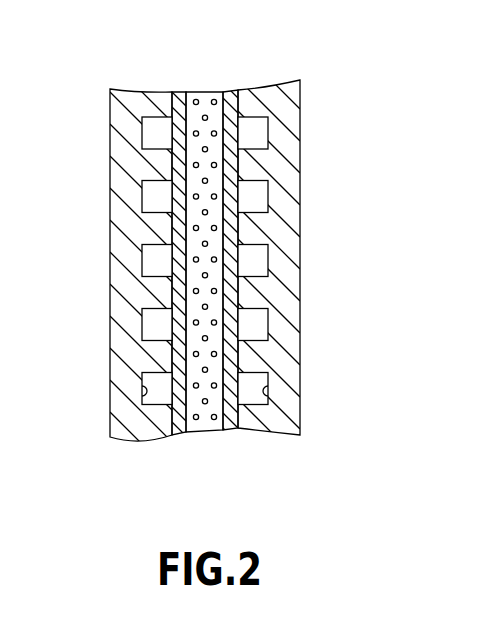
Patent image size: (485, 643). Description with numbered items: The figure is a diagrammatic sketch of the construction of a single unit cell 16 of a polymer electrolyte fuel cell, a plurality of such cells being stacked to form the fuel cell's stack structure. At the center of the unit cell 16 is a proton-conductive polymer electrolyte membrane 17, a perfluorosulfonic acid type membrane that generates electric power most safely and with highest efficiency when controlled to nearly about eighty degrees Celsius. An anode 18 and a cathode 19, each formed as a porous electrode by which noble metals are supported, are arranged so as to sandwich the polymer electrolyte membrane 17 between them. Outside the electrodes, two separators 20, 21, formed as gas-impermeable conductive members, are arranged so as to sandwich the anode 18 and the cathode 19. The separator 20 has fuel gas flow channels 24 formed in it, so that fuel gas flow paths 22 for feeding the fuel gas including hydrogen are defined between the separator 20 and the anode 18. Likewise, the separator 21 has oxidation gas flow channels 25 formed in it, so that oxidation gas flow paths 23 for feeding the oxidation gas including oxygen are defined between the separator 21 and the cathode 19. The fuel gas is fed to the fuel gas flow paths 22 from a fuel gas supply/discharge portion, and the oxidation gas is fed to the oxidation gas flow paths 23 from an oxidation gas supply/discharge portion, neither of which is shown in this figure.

The unit cell 16 is at (209, 259).
The proton-conductive polymer electrolyte membrane 17 is at (204, 92).
The anode 18 is at (230, 92).
The cathode 19 is at (178, 92).
The separator 20 is at (300, 258).
The separator 21 is at (110, 243).
The fuel gas flow paths 22 is at (255, 138).
The oxidation gas flow paths 23 is at (150, 136).
The fuel gas flow channels 24 is at (265, 392).
The oxidation gas flow channels 25 is at (145, 391).